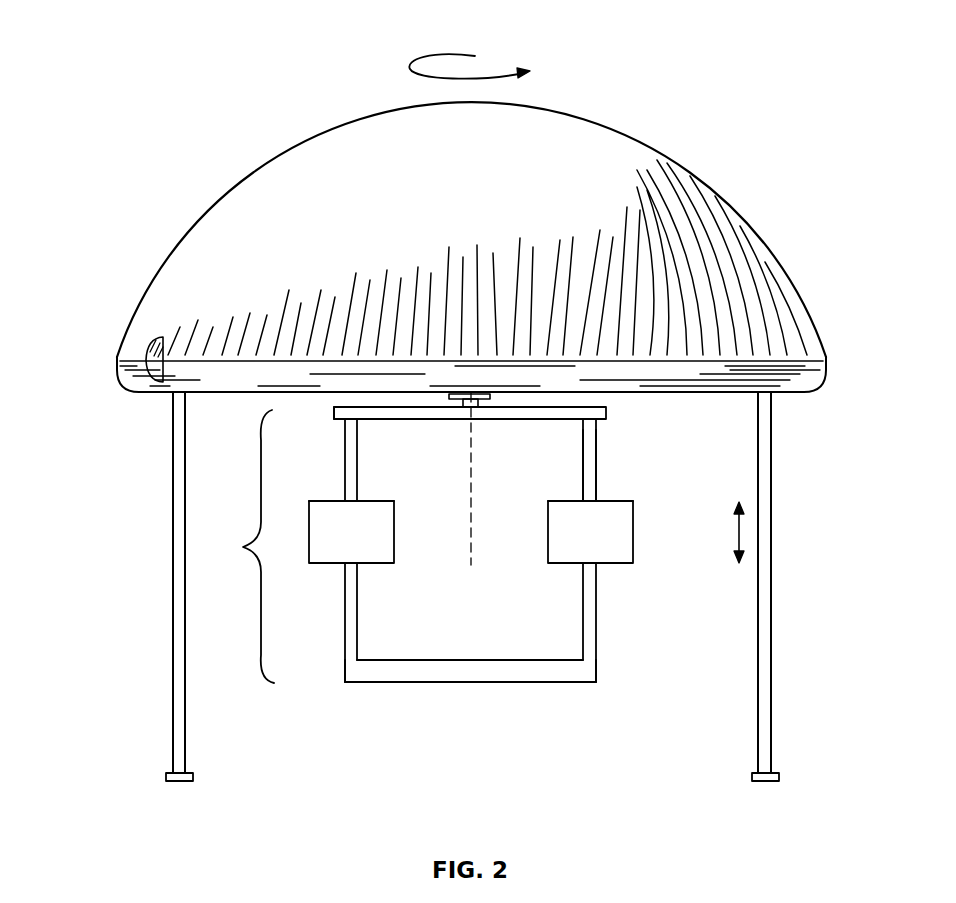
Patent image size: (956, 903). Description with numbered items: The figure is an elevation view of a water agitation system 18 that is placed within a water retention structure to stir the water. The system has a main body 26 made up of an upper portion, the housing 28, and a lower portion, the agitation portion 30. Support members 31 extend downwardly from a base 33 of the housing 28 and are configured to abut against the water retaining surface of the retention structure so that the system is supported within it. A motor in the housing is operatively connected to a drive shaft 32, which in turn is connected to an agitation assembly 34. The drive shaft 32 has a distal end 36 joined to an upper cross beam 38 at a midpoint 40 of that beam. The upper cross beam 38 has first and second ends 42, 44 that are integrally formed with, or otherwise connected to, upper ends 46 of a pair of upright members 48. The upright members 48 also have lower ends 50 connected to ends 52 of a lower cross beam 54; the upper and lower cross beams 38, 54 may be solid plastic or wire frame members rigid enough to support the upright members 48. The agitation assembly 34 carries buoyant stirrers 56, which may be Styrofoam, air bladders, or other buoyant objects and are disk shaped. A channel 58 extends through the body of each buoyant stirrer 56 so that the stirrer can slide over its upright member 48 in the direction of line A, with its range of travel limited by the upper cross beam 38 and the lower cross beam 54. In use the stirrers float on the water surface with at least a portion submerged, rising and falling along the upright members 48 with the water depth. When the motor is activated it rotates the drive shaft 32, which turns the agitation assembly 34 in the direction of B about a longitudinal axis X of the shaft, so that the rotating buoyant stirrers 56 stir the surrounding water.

The water agitation system 18 is at (192, 45).
The main body 26 is at (175, 236).
The housing 28 is at (299, 146).
The base 33 is at (150, 394).
The agitation portion 30 is at (780, 593).
The support members 31 is at (172, 513).
The agitation assembly 34 is at (448, 554).
The upper cross beam 38 is at (377, 421).
The first end 42 is at (333, 413).
The drive shaft 32 is at (486, 400).
The distal end 36 is at (477, 408).
The midpoint 40 is at (467, 421).
The upper ends 46 is at (359, 425).
The second end 44 is at (597, 438).
The upright members 48 is at (358, 617).
The lower ends 50 is at (378, 659).
The ends 52 is at (345, 689).
The lower cross beam 54 is at (460, 683).
The buoyant stirrers 56 is at (383, 547).
The channel 58 is at (360, 503).
The longitudinal axis X is at (473, 551).
The direction of line A is at (736, 532).
The direction B is at (470, 52).